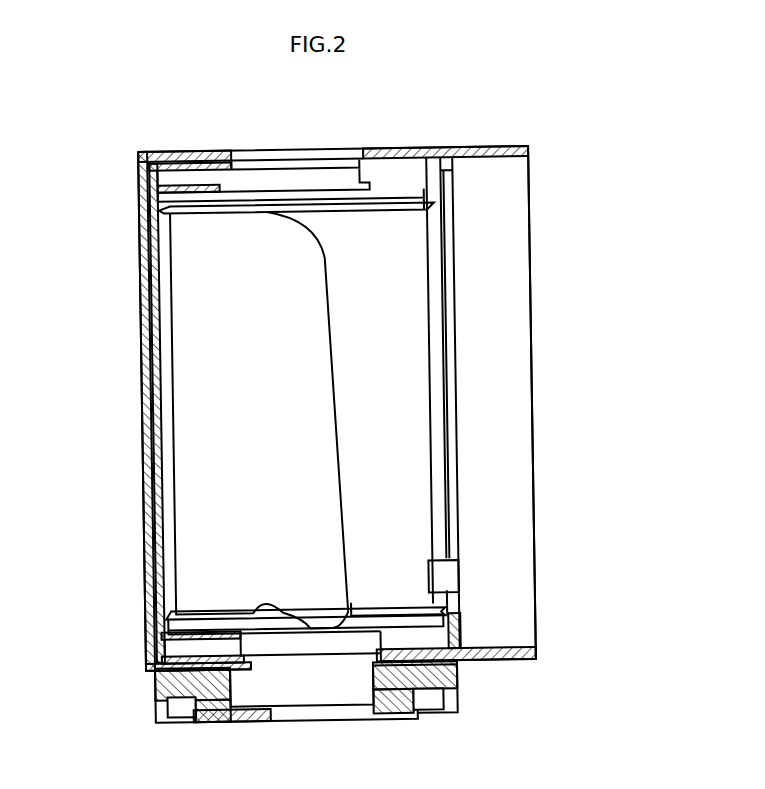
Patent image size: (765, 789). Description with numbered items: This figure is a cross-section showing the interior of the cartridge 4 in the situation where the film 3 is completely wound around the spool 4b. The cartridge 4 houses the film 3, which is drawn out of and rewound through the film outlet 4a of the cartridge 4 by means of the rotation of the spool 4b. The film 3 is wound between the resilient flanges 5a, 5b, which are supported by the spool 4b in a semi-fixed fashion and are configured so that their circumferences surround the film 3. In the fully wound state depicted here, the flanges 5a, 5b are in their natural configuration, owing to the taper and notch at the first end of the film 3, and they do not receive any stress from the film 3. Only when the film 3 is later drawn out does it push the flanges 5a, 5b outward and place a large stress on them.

The film 3 is at (205, 437).
The cartridge 4 is at (493, 147).
The film outlet 4a is at (510, 442).
The spool 4b is at (286, 692).
The resilient flange 5a is at (197, 198).
The resilient flange 5b is at (185, 627).